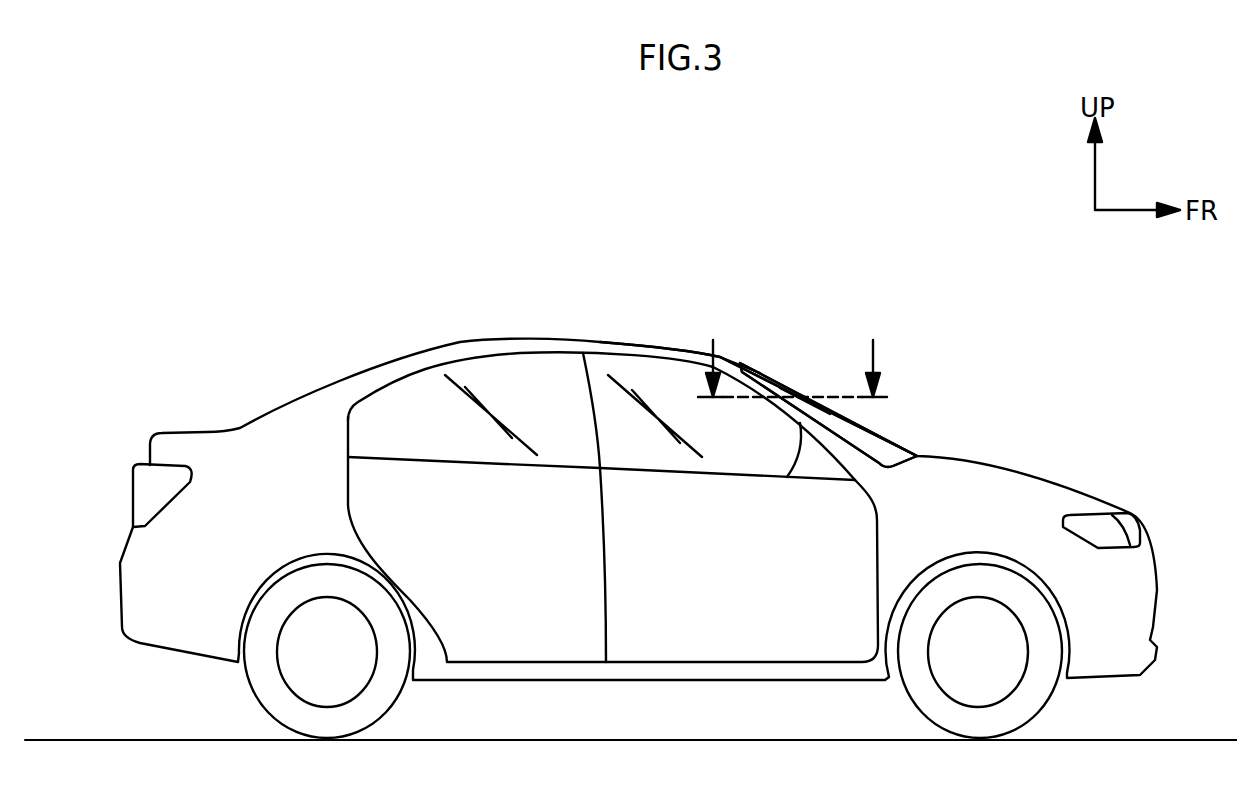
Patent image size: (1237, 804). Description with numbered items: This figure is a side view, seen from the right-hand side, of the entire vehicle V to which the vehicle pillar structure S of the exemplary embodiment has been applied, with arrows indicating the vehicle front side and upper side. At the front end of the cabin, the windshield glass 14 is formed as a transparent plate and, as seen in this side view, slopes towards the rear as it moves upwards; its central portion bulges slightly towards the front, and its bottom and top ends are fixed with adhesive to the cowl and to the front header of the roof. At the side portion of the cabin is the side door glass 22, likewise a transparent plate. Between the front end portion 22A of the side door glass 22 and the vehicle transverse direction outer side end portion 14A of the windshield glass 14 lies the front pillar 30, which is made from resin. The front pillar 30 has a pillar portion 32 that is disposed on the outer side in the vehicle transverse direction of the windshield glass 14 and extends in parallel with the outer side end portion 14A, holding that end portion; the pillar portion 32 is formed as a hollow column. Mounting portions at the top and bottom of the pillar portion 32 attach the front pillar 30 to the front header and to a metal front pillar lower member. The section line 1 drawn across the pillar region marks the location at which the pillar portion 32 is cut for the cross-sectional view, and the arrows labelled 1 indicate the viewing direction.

The vehicle V is at (473, 265).
The vehicle pillar structure S is at (823, 348).
The section line 1 is at (792, 354).
The windshield glass 14 is at (773, 378).
The vehicle transverse direction outer side end portion 14A is at (782, 392).
The side door glass 22 is at (647, 373).
The front end portion 22A is at (787, 477).
The pillar portion 32 is at (840, 442).
The front pillar 30 is at (828, 415).